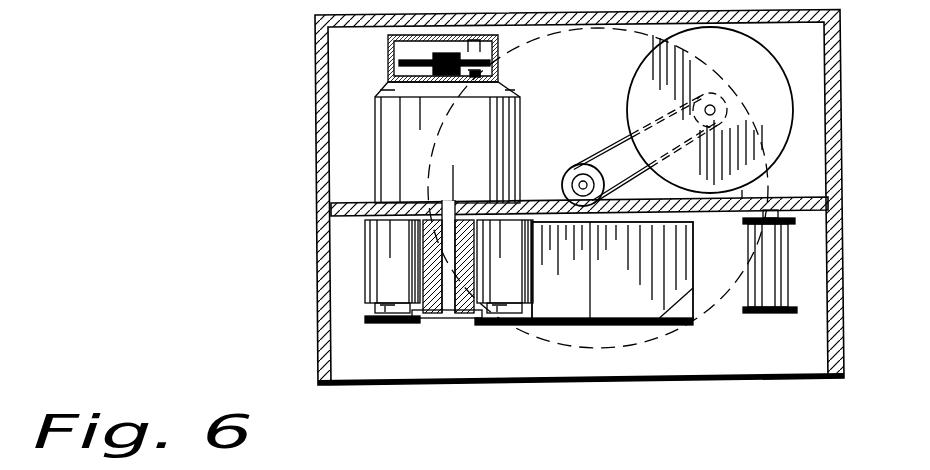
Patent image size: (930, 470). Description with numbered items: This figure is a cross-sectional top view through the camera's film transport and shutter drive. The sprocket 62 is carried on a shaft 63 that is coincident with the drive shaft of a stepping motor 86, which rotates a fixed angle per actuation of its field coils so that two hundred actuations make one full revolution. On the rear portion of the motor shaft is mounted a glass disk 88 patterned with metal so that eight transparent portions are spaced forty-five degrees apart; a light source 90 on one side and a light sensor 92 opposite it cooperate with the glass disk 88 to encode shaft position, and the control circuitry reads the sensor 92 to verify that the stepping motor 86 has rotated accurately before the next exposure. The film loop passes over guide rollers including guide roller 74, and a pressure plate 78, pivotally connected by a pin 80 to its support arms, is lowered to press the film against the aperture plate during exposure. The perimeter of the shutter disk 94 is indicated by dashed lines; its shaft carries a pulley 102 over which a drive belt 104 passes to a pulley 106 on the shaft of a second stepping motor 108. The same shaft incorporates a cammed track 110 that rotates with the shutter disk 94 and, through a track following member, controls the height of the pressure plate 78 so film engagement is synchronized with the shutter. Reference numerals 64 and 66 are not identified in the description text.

The sprocket 62 is at (425, 315).
The shaft 63 is at (450, 317).
The motor 64 is at (365, 289).
The motor 66 is at (534, 266).
The guide roller 74 is at (790, 293).
The pressure plate 78 is at (687, 272).
The pin 80 is at (593, 305).
The stepping motor 86 is at (375, 145).
The glass disk 88 is at (390, 62).
The light source 90 is at (500, 78).
The light sensor 92 is at (503, 58).
The shutter disk 94 is at (718, 314).
The pulley 102 is at (578, 167).
The drive belt 104 is at (618, 155).
The pulley 106 is at (718, 92).
The second stepping motor 108 is at (783, 132).
The cammed surface or track 110 is at (566, 180).